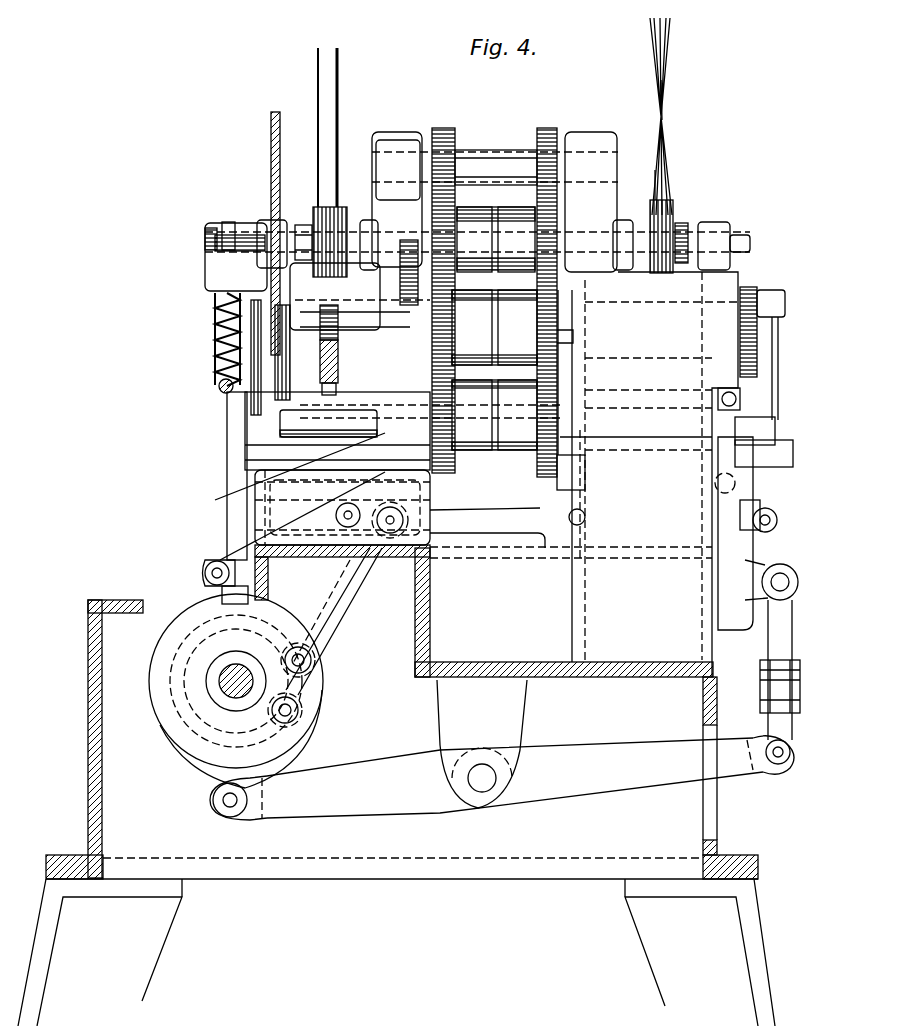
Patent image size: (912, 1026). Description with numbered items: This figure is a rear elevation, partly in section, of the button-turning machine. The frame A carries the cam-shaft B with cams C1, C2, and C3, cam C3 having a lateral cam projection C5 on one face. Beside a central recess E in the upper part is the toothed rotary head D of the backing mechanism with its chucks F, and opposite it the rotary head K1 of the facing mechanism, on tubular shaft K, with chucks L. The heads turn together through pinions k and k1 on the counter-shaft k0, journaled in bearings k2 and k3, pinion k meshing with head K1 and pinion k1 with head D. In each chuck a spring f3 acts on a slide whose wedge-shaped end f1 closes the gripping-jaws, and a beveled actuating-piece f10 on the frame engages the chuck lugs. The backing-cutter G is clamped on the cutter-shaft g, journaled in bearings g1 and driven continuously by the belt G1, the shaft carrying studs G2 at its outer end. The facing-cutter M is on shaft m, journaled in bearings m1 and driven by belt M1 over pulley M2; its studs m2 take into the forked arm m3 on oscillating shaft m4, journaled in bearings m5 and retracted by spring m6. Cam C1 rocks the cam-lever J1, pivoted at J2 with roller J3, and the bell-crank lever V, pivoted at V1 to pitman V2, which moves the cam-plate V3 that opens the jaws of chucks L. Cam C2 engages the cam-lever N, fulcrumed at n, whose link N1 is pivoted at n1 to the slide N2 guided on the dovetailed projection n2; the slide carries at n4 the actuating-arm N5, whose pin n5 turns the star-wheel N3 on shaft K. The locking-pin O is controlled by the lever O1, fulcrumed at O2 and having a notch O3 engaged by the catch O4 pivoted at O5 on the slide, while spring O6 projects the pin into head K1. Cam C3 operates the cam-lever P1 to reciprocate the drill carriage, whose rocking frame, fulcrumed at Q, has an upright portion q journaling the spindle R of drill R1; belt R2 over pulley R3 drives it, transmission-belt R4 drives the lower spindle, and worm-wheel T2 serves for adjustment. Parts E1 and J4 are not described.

The frame A is at (396, 940).
The cam-shaft B is at (232, 684).
The cam C1 is at (335, 367).
The cam C2 is at (212, 780).
The cam C3 is at (190, 728).
The cam-shaped projection C5 is at (258, 590).
The rotary head D is at (430, 225).
The central recess E is at (458, 452).
The gear hub E1 is at (465, 452).
The chucks F is at (468, 238).
The backing-cutter G is at (558, 165).
The belt G1 is at (668, 88).
The studs G2 is at (678, 200).
The cam-lever J1 is at (290, 470).
The pivot J2 is at (430, 560).
The antifriction-roller J3 is at (338, 672).
The pivot J4 is at (345, 560).
The shaft K is at (750, 288).
The rotary head K1 is at (560, 292).
The chucks L is at (510, 240).
The facing-cutter M is at (490, 240).
The belt M1 is at (309, 127).
The pulley M2 is at (316, 207).
The cam-lever N is at (530, 777).
The link N1 is at (765, 680).
The slide N2 is at (712, 595).
The star-wheel N3 is at (770, 288).
The actuating-arm N5 is at (780, 350).
The locking-pin O is at (742, 395).
The lever O1 is at (760, 422).
The fulcrum O2 is at (735, 478).
The angular recess O3 is at (720, 500).
The spring-actuated catch O4 is at (760, 505).
The pivot O5 is at (775, 514).
The spring O6 is at (740, 580).
The cam-lever P1 is at (216, 560).
The fulcrum Q is at (230, 444).
The spindle R is at (356, 280).
The drill R1 is at (478, 371).
The belt R2 is at (260, 233).
The pulley R3 is at (335, 296).
The transmission-belt R4 is at (288, 330).
The worm-wheel T2 is at (355, 309).
The bell-crank lever V is at (345, 615).
The pivot V1 is at (586, 519).
The pitman V2 is at (600, 474).
The cam-plate V3 is at (560, 425).
The wedge-shaped end f1 is at (480, 452).
The spring f3 is at (319, 346).
The beveled actuating-piece f10 is at (418, 296).
The cutter-shaft g is at (684, 232).
The bearings g1 is at (618, 222).
The pinion k is at (547, 293).
The counter-shaft k0 is at (493, 152).
The pinion k1 is at (443, 292).
The bearing k2 is at (390, 140).
The bearing k3 is at (591, 190).
The rotary shaft m is at (303, 226).
The bearings m1 is at (368, 222).
The studs m2 is at (225, 223).
The oscillating arm m3 is at (208, 228).
The oscillating shaft m4 is at (215, 330).
The bearings m5 is at (212, 270).
The spring m6 is at (219, 384).
The fulcrum n is at (495, 790).
The pivot n1 is at (785, 600).
The dovetailed projection n2 is at (712, 640).
The pivot n4 is at (793, 455).
The pin n5 is at (785, 298).
The upright portion q is at (250, 398).